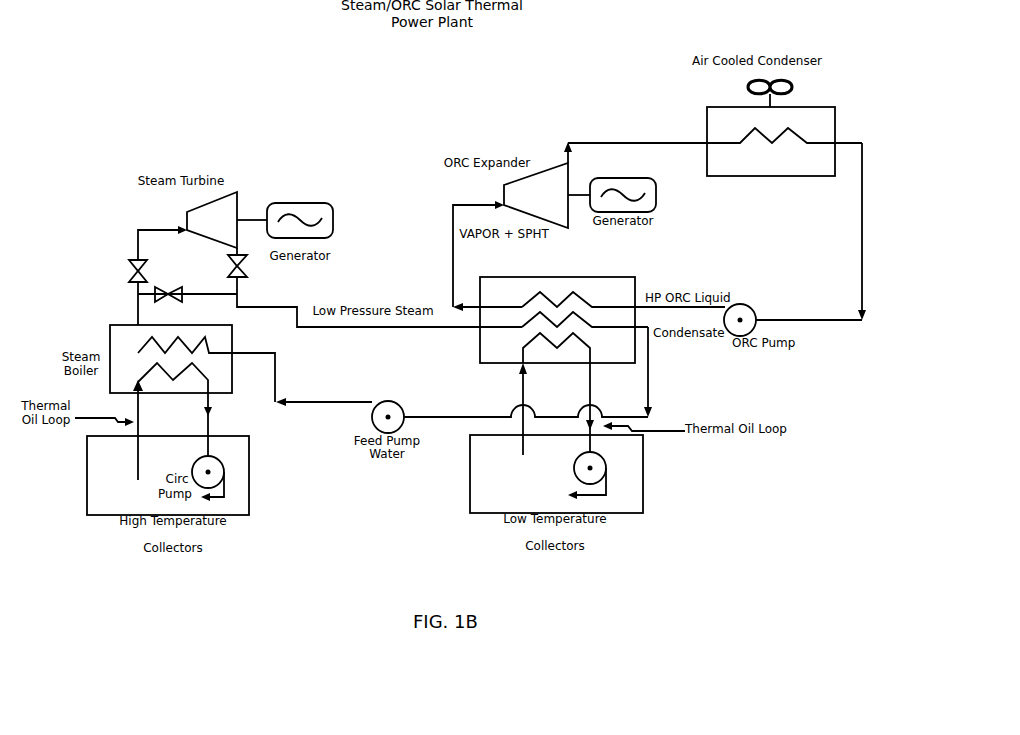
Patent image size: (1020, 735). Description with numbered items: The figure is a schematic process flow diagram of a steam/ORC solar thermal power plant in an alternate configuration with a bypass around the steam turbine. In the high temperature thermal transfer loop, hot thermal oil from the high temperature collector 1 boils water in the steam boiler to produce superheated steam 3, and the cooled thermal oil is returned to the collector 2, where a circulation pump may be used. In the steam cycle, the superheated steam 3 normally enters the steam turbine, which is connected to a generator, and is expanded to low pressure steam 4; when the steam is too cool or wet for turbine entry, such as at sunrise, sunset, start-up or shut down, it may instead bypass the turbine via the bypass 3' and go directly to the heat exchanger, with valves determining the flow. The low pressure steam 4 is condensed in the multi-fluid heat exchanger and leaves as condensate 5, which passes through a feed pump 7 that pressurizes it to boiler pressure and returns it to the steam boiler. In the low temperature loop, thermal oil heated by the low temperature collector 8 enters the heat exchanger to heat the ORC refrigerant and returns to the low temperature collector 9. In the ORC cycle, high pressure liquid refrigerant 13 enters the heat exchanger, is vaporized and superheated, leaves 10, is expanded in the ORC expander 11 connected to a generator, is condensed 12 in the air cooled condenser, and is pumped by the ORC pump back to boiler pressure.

The hot thermal oil from high temperature collector 1 is at (131, 430).
The cooled thermal oil returned to high temperature collector 2 is at (209, 471).
The superheated steam 3 is at (154, 275).
The steam turbine bypass 3' is at (187, 290).
The expanded low pressure steam 4 is at (375, 287).
The condensate 5 is at (653, 372).
The feed pump 7 is at (324, 395).
The thermal oil heated by low temperature collector 8 is at (518, 411).
The thermal oil return to low temperature collector 9 is at (592, 431).
The superheated ORC refrigerant vapor 10 is at (487, 256).
The expanded refrigerant vapor 11 is at (713, 144).
The condensed refrigerant 12 is at (820, 231).
The high pressure liquid ORC refrigerant 13 is at (569, 310).